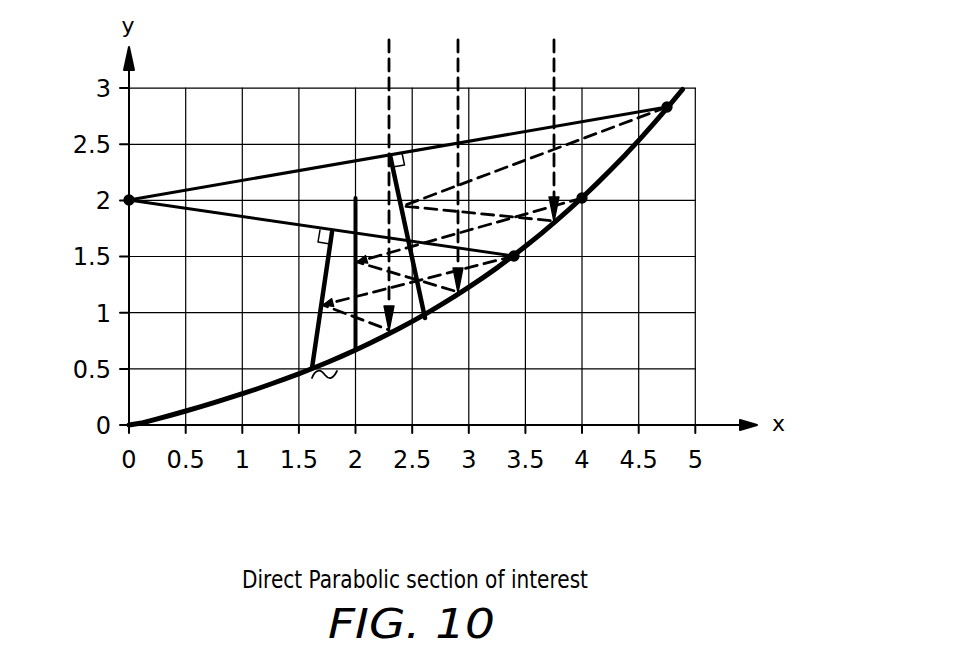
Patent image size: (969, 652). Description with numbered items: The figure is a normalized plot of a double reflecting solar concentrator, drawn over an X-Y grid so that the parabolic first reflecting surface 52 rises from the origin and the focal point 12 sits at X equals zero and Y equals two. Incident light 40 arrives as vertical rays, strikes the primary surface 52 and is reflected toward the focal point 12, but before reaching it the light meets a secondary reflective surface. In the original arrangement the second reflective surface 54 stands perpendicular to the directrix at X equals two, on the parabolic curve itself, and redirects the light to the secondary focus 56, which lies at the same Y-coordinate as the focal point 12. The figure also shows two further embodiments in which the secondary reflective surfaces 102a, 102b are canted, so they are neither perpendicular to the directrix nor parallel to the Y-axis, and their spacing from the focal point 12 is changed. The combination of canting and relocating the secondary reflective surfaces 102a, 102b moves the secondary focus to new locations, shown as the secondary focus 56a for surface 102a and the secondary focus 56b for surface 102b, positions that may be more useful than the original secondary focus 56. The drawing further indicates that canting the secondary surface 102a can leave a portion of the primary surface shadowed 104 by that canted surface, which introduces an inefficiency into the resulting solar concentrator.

The focal point 12 is at (127, 198).
The incident light 40 is at (388, 70).
The first reflecting surface 52 is at (622, 160).
The second reflective surface 54 is at (358, 276).
The secondary focus 56 is at (590, 205).
The secondary focus 56a is at (518, 262).
The secondary focus 56b is at (672, 104).
The secondary reflective surface 102a is at (324, 303).
The secondary reflective surface 102b is at (405, 187).
The shadowed portion 104 is at (326, 384).